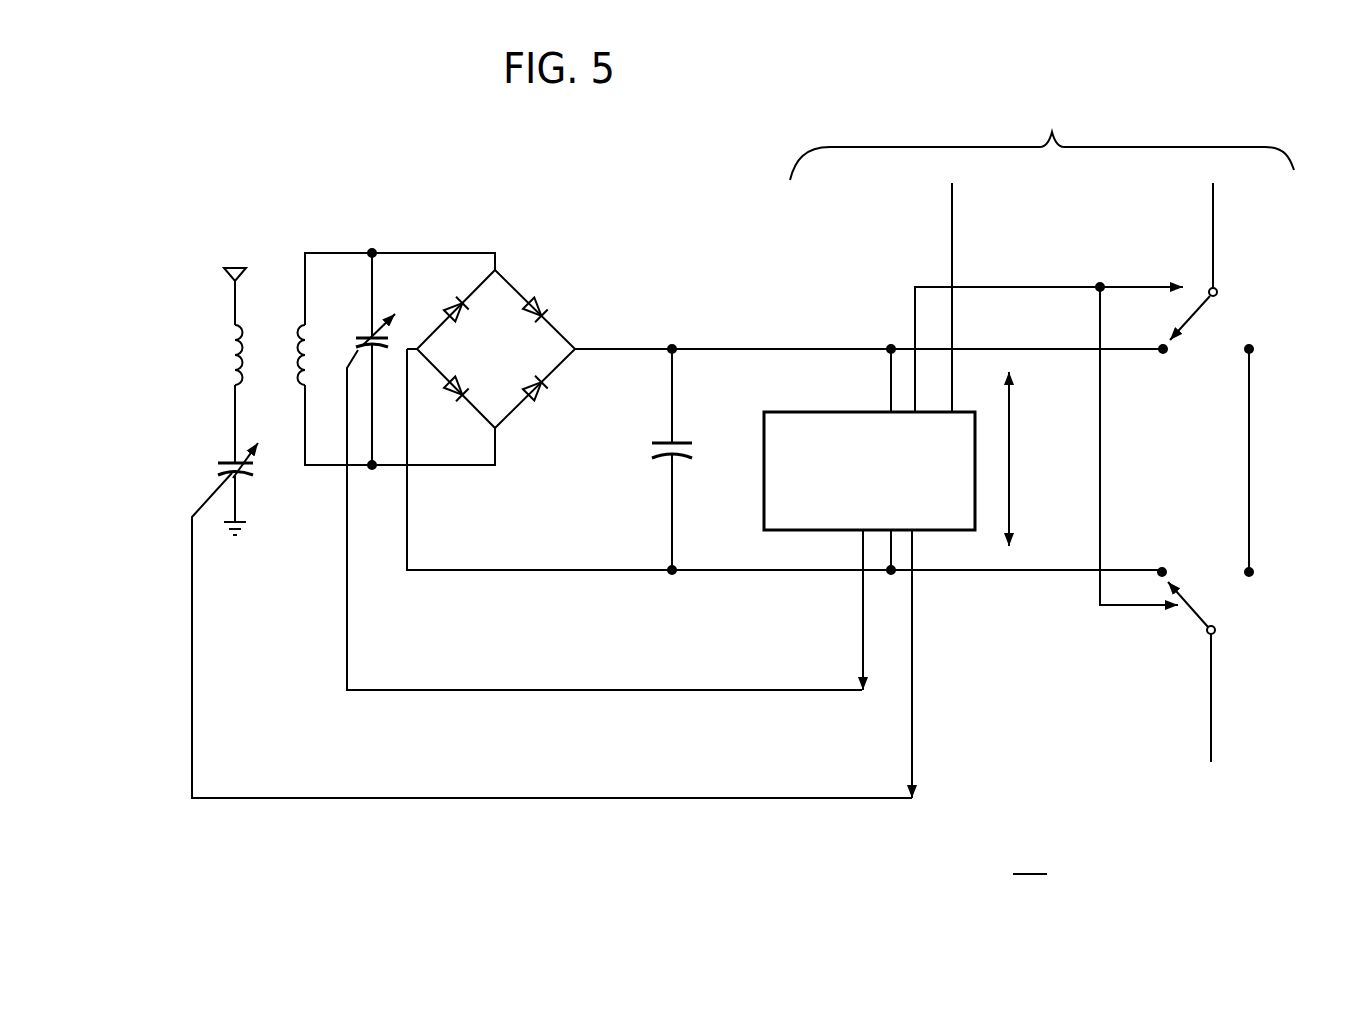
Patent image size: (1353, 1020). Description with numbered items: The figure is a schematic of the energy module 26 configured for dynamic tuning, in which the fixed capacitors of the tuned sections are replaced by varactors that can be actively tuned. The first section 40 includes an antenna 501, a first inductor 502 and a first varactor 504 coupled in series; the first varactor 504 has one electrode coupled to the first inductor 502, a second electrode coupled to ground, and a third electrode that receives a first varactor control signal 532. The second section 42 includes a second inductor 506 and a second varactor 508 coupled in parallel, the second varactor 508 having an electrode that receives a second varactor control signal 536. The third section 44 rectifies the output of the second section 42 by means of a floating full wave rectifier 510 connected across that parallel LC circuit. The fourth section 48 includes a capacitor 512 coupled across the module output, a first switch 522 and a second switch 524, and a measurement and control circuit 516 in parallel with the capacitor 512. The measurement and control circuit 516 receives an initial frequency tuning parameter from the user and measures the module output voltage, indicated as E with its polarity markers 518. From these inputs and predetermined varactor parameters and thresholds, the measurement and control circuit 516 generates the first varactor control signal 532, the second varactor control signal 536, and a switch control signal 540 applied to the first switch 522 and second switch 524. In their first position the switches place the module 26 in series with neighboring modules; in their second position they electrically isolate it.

The energy module 26 is at (1030, 862).
The first section 40 is at (258, 240).
The second section 42 is at (393, 242).
The third section 44 is at (521, 255).
The fourth section 48 is at (1042, 137).
The antenna 501 is at (222, 282).
The first inductor 502 is at (230, 352).
The first varactor 504 is at (215, 470).
The second inductor 506 is at (288, 362).
The second varactor 508 is at (355, 332).
The floating full wave rectifier 510 is at (556, 318).
The capacitor 512 is at (650, 452).
The measurement and control circuit 516 is at (822, 412).
The output voltage E 518 is at (1049, 461).
The first switch 522 is at (1213, 316).
The second switch 524 is at (1222, 608).
The first varactor control signal 532 is at (370, 800).
The second varactor control signal 536 is at (385, 690).
The switch control signal 540 is at (1140, 287).